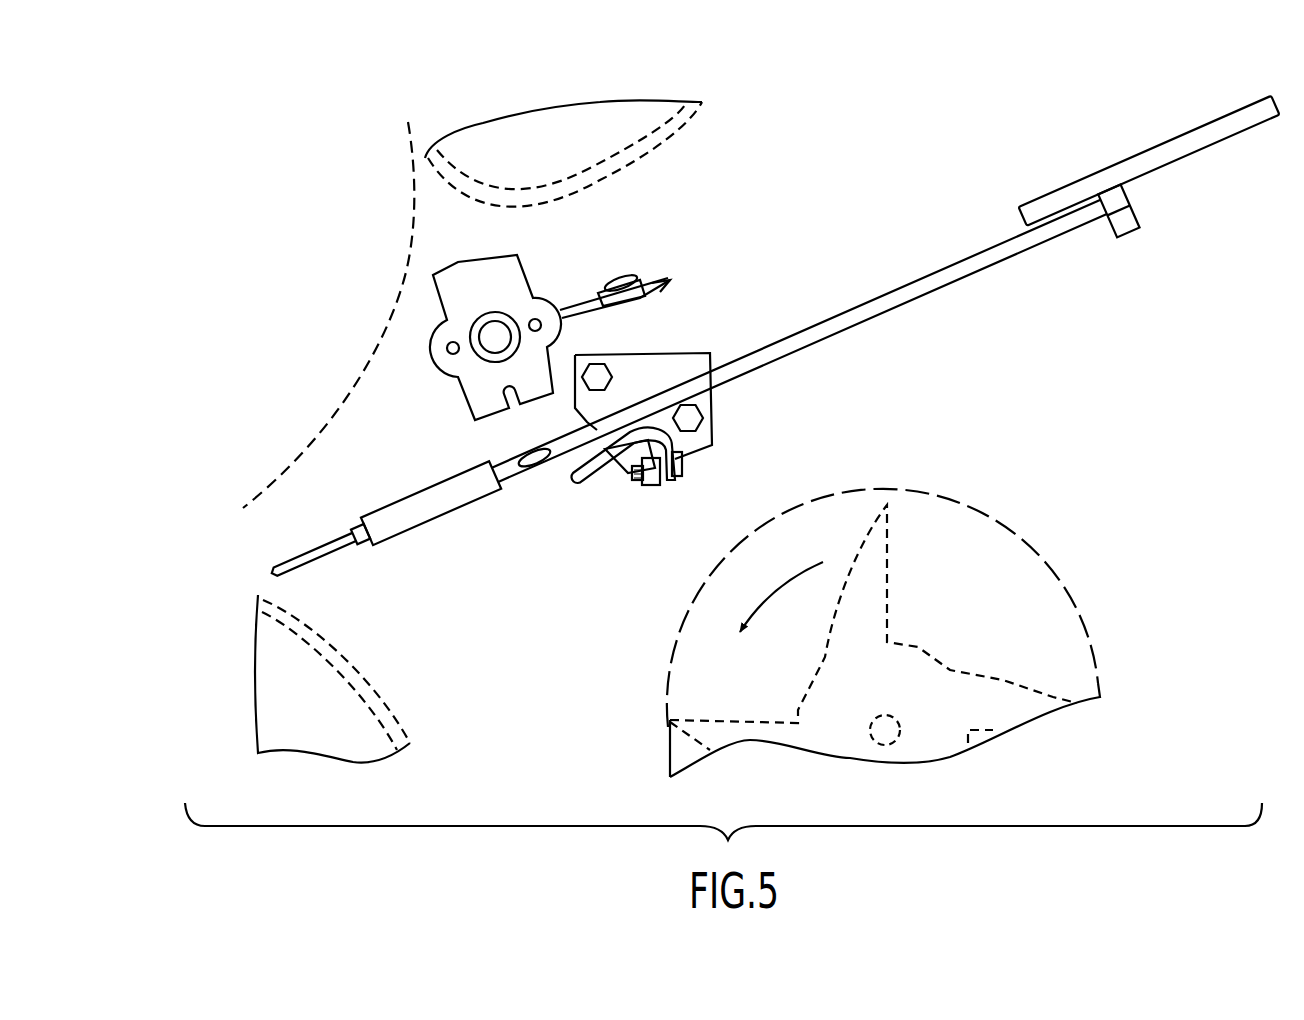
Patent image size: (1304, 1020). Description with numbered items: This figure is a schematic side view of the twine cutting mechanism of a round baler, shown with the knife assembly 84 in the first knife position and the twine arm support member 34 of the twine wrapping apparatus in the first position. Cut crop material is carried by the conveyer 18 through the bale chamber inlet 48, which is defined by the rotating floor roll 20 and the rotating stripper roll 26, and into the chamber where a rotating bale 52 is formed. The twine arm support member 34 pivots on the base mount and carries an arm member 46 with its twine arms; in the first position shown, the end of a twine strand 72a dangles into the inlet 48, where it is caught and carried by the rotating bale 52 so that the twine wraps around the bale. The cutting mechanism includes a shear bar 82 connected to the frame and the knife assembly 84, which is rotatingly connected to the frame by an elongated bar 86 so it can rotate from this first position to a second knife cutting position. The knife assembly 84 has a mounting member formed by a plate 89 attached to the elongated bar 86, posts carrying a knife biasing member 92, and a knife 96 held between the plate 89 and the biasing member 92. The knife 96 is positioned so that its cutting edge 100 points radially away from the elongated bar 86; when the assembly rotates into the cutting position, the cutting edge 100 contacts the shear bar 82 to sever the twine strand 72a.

The conveyer 18 is at (920, 647).
The floor roll 20 is at (363, 680).
The stripper roll 26 is at (696, 126).
The twine arm support member 34 is at (847, 292).
The arm member 46 is at (478, 492).
The bale chamber inlet 48 is at (452, 580).
The bale 52 is at (308, 325).
The twine strand 72a is at (268, 568).
The shear bar 82 is at (578, 478).
The knife assembly 84 is at (716, 241).
The elongated bar 86 is at (495, 337).
The plate 89 is at (598, 315).
The knife biasing member 92 is at (640, 280).
The knife 96 is at (600, 296).
The cutting edge 100 is at (670, 280).